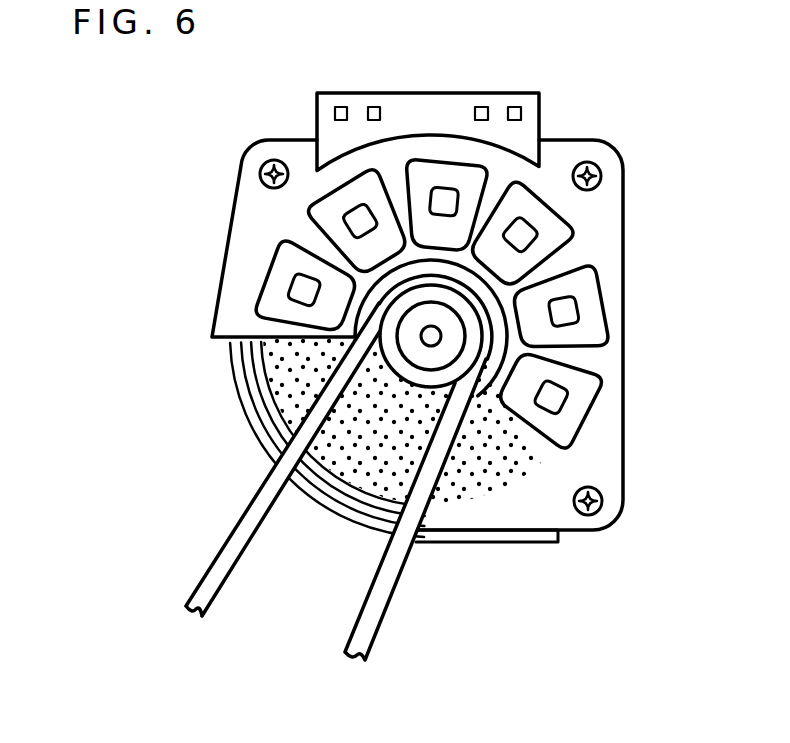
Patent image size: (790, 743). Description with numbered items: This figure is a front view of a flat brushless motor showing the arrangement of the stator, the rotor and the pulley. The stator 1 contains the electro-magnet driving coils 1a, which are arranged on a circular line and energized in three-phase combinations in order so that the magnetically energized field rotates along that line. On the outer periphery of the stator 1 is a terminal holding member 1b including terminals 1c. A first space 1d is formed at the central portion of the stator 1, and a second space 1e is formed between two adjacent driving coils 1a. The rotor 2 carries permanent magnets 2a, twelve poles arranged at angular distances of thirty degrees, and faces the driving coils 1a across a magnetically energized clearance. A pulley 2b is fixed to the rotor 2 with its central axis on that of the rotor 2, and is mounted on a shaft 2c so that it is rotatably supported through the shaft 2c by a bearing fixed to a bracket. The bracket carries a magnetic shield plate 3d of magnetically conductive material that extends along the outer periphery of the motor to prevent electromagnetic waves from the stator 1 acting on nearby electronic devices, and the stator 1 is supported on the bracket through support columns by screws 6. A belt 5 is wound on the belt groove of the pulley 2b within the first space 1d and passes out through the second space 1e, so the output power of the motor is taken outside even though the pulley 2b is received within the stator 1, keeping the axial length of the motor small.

The stator 1 is at (614, 421).
The electro-magnet driving coils 1a is at (604, 318).
The terminal holding member 1b is at (427, 107).
The terminals 1c is at (522, 112).
The first space 1d is at (555, 268).
The second space 1e is at (229, 345).
The rotor 2 is at (270, 410).
The permanent magnets 2a is at (270, 373).
The pulley 2b is at (402, 375).
The shaft 2c is at (428, 342).
The magnetic shield plate 3d is at (268, 445).
The belt 5 is at (367, 637).
The screws 6 is at (259, 174).